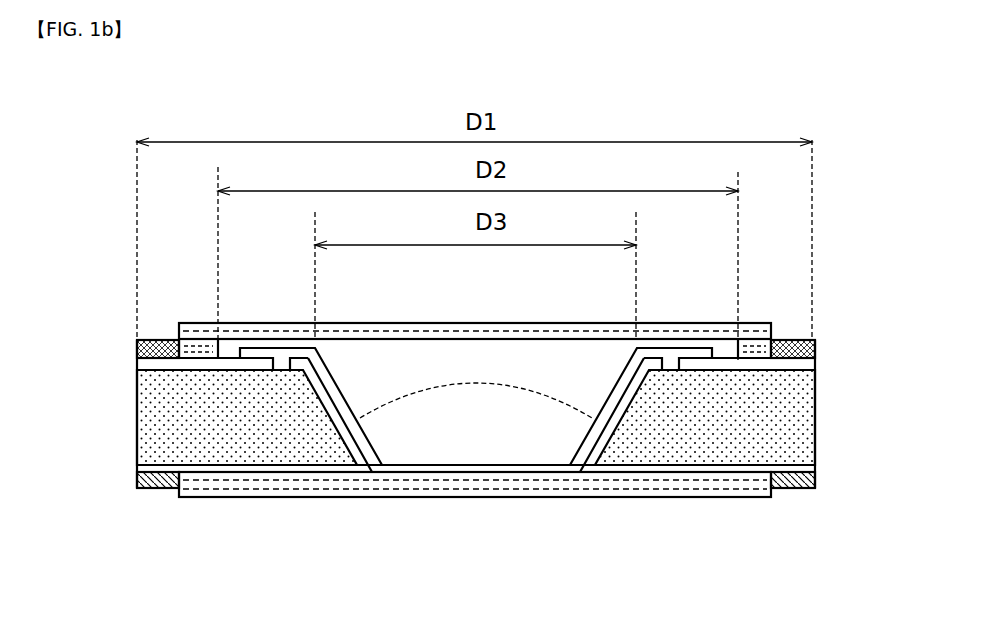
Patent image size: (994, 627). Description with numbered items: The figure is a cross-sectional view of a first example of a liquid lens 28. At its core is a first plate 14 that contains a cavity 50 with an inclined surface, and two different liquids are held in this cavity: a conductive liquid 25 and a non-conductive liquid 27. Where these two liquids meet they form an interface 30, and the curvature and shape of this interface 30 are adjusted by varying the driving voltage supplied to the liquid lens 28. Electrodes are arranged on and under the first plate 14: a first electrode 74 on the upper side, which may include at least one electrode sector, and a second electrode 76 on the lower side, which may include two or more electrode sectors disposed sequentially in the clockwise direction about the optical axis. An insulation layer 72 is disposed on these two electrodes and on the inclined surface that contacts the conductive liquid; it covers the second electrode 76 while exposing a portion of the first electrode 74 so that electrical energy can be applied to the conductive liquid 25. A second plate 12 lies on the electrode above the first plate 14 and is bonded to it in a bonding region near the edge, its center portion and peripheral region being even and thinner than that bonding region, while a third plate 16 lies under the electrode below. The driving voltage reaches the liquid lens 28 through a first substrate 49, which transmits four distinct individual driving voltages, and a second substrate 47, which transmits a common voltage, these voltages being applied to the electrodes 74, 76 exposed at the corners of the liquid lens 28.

The second plate 12 is at (478, 320).
The first plate 14 is at (820, 419).
The third plate 16 is at (479, 502).
The conductive liquid 25 is at (433, 358).
The non-conductive liquid 27 is at (442, 442).
The liquid lens 28 is at (914, 219).
The interface 30 is at (527, 382).
The second substrate 47 is at (795, 336).
The first substrate 49 is at (794, 494).
The cavity 50 is at (545, 475).
The insulation layer 72 is at (326, 350).
The first electrode 74 is at (820, 361).
The second electrode 76 is at (820, 470).